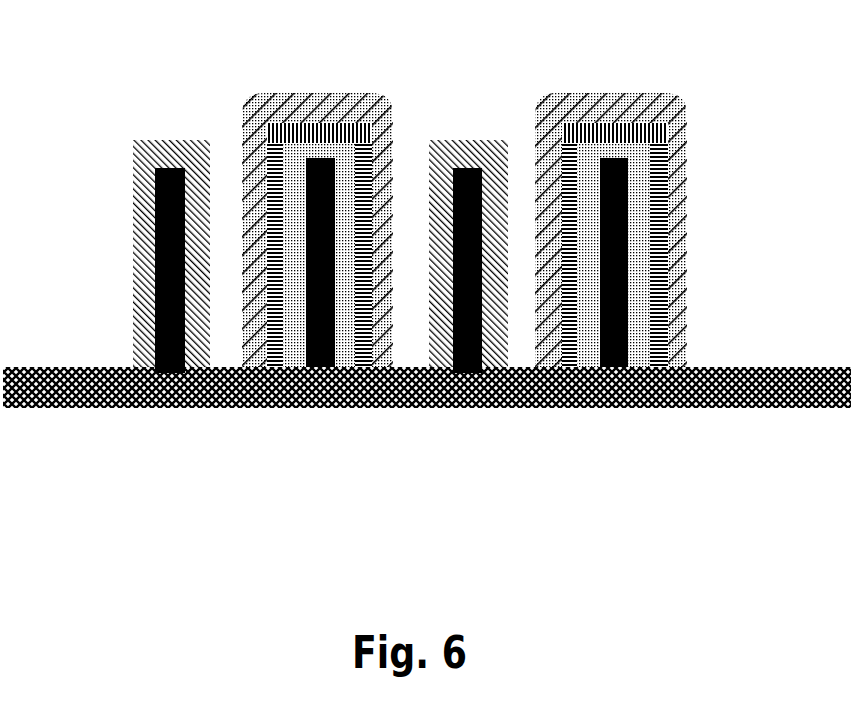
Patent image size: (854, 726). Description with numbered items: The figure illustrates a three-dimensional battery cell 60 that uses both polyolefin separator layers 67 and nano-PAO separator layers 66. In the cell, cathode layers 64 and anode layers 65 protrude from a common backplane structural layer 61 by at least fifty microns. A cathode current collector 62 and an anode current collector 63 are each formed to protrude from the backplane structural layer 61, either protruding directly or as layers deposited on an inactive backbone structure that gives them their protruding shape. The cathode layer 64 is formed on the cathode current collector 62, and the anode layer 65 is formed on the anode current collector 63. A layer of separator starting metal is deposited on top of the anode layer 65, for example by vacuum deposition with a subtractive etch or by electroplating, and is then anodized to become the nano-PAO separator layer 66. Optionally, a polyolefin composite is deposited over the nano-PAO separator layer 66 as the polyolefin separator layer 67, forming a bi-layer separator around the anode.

The three-dimensional battery cell 60 is at (427, 288).
The common backplane structural layer 61 is at (660, 386).
The cathode current collector 62 is at (150, 327).
The anode current collector 63 is at (618, 247).
The cathode layer 64 is at (135, 251).
The anode layer 65 is at (645, 170).
The nano-PAO separator layer 66 is at (282, 126).
The polyolefin separator layer 67 is at (337, 108).